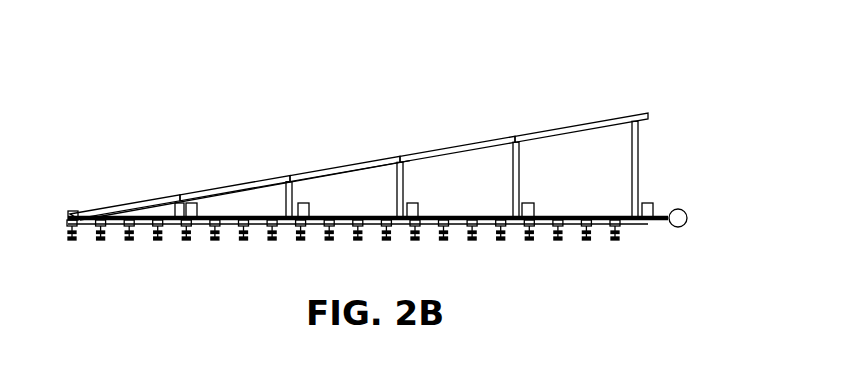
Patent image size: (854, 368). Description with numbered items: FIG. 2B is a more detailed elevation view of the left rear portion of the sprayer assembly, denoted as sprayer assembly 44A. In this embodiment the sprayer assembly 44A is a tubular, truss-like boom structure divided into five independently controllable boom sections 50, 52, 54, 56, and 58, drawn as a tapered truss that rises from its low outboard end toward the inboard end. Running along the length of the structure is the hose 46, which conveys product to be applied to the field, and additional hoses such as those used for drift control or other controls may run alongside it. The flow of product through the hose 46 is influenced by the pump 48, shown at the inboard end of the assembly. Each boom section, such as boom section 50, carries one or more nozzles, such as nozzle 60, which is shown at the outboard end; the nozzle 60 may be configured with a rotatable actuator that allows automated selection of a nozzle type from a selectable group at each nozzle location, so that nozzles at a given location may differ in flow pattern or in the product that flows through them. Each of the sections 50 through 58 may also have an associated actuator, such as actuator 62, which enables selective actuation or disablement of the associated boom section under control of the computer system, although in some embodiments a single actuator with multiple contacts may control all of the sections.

The sprayer assembly 44A is at (108, 50).
The hose 46 is at (573, 215).
The pump 48 is at (688, 215).
The boom section 50 is at (147, 183).
The boom section 52 is at (250, 166).
The boom section 54 is at (352, 152).
The boom section 56 is at (455, 134).
The boom section 58 is at (574, 108).
The nozzle 60 is at (67, 238).
The actuator 62 is at (420, 209).